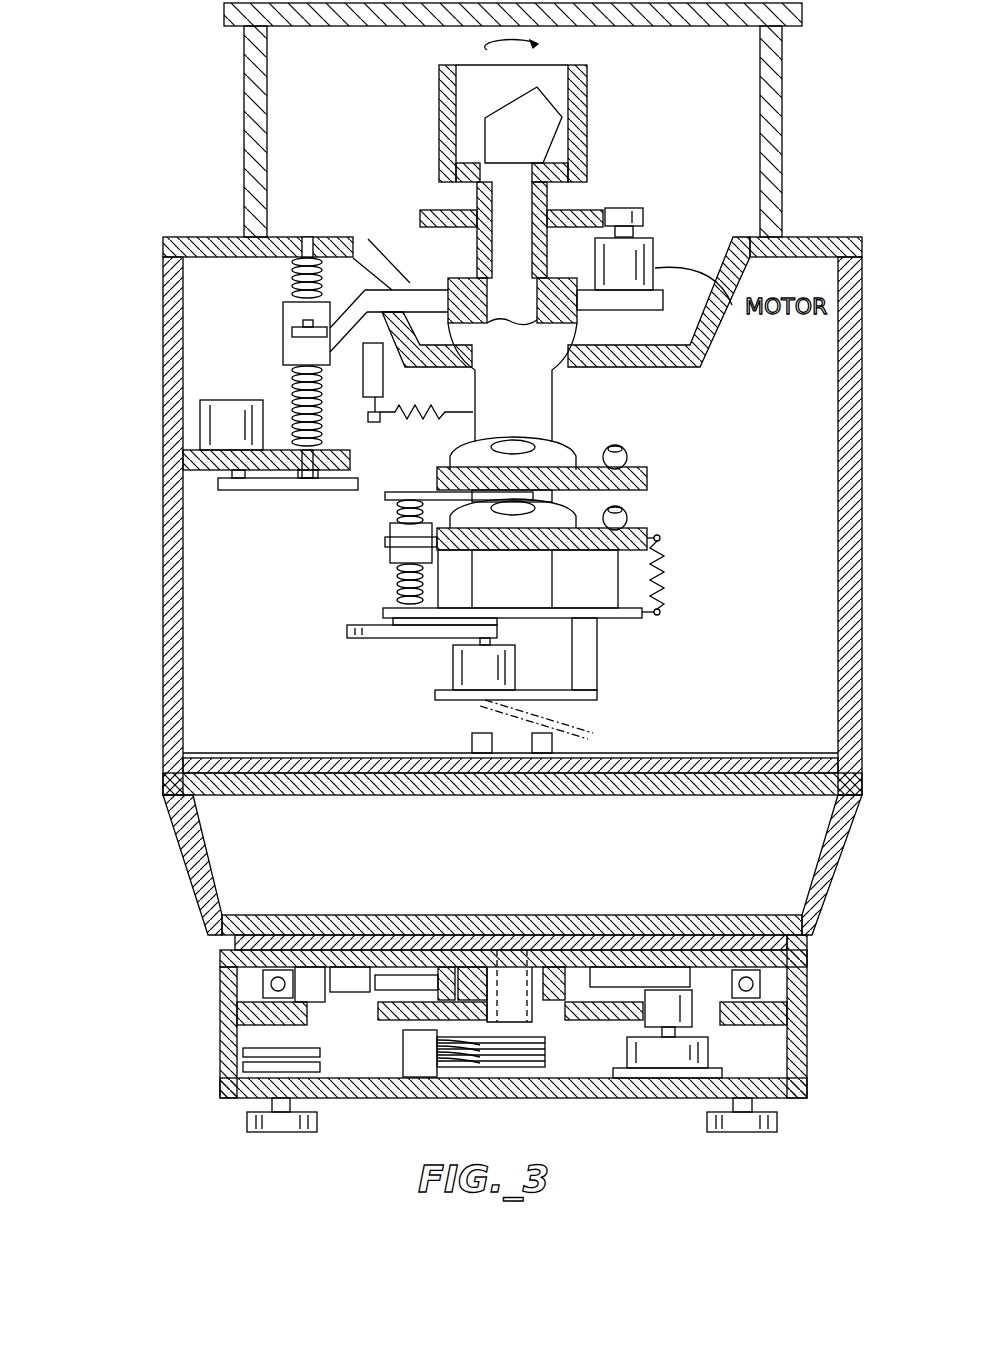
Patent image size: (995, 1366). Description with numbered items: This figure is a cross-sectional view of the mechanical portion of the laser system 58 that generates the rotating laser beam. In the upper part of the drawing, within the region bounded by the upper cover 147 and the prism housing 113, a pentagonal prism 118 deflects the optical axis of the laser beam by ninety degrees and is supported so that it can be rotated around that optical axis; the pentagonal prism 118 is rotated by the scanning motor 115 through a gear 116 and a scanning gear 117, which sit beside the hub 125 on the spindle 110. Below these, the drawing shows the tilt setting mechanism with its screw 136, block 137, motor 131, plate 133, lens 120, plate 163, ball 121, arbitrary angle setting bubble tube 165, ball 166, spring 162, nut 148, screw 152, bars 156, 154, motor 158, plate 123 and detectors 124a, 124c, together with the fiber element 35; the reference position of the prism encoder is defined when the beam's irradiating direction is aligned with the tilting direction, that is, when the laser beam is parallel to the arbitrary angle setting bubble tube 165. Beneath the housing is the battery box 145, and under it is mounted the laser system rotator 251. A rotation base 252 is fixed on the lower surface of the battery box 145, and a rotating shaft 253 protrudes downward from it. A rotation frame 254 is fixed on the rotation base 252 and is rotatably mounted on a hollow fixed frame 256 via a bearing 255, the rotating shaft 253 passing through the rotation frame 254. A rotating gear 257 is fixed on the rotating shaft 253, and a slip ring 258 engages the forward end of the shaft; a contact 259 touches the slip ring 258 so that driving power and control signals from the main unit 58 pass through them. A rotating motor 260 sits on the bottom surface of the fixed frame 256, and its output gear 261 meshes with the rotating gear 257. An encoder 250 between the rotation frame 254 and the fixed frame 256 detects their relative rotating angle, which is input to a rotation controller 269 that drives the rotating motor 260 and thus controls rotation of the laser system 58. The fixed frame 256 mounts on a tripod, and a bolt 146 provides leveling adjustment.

The upper housing cover 147 is at (782, 120).
The polygon mirror housing 113 is at (587, 118).
The pentagonal prism 118 is at (480, 128).
The scanning gear 117 is at (587, 212).
The gear 116 is at (620, 208).
The scanning motor 115 is at (655, 262).
The hub and support arm 125 is at (415, 290).
The spindle shaft 110 is at (543, 415).
The optical fiber connector 35 is at (323, 410).
The lead screw 136 is at (308, 490).
The nut block 137 is at (282, 318).
The adjustment motor 131 is at (257, 400).
The mounting plate 133 is at (232, 490).
The upper lens 120 is at (457, 444).
The upper lens plate 163 is at (650, 482).
The ball bearing 121 is at (616, 446).
The arbitrary angle setting bubble tube 165 is at (573, 505).
The ball bearing 166 is at (616, 507).
The return spring 162 is at (597, 553).
The nut 148 is at (390, 540).
The lead screw 152 is at (395, 578).
The support bar 156 is at (497, 628).
The mounting bar 154 is at (365, 640).
The focus motor 158 is at (452, 665).
The detector plate 123 is at (583, 700).
The photodetector 124a is at (470, 745).
The photodetector 124c is at (555, 745).
The laser system 58 is at (152, 722).
The battery box 145 is at (822, 910).
The laser system rotator 251 is at (530, 1011).
The rotation base 252 is at (335, 935).
The rotating shaft 253 is at (523, 988).
The rotation frame 254 is at (218, 977).
The bearing 255 is at (800, 992).
The fixed frame 256 is at (808, 1068).
The encoder 250 is at (365, 1012).
The rotation controller 269 is at (253, 1048).
The rotating gear 257 is at (395, 1023).
The slip ring 258 is at (547, 1062).
The contact 259 is at (455, 1070).
The rotating motor 260 is at (690, 1066).
The output gear 261 is at (645, 1022).
The bolt 146 is at (777, 1117).